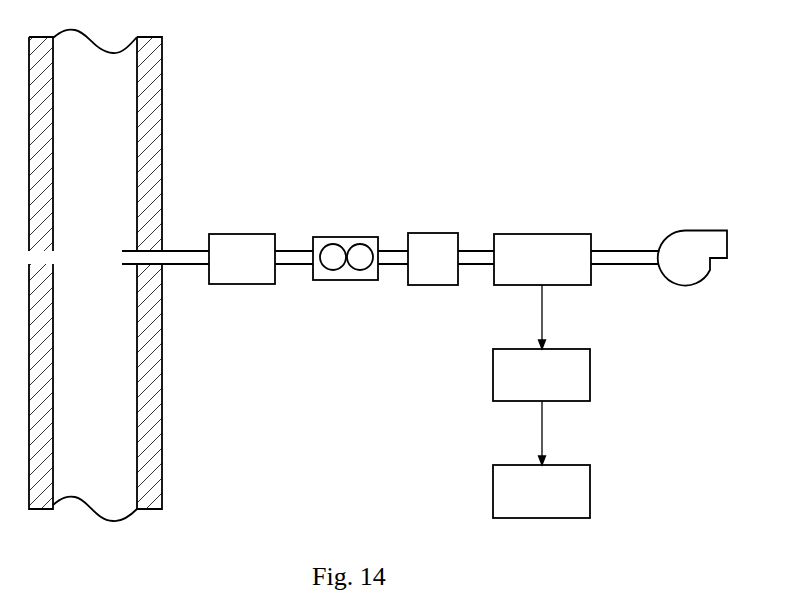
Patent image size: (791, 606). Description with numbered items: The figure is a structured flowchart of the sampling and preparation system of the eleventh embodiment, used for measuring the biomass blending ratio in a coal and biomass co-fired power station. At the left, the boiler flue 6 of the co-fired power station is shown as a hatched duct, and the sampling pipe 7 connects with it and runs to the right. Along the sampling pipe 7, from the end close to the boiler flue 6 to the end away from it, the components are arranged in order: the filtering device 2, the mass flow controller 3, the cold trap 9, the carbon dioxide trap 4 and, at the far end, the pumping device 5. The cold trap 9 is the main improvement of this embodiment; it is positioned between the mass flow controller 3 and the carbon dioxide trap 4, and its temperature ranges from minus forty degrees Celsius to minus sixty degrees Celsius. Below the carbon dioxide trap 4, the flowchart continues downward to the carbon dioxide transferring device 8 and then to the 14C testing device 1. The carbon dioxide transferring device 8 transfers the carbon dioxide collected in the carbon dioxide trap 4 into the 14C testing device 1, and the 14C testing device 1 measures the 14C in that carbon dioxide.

The 14C testing device 1 is at (528, 479).
The filtering device 2 is at (225, 250).
The mass flow controller 3 is at (327, 255).
The carbon dioxide trap 4 is at (525, 257).
The pumping device 5 is at (688, 257).
The boiler flue 6 is at (112, 473).
The sampling pipe 7 is at (605, 258).
The carbon dioxide transferring device 8 is at (528, 375).
The cold trap 9 is at (433, 257).